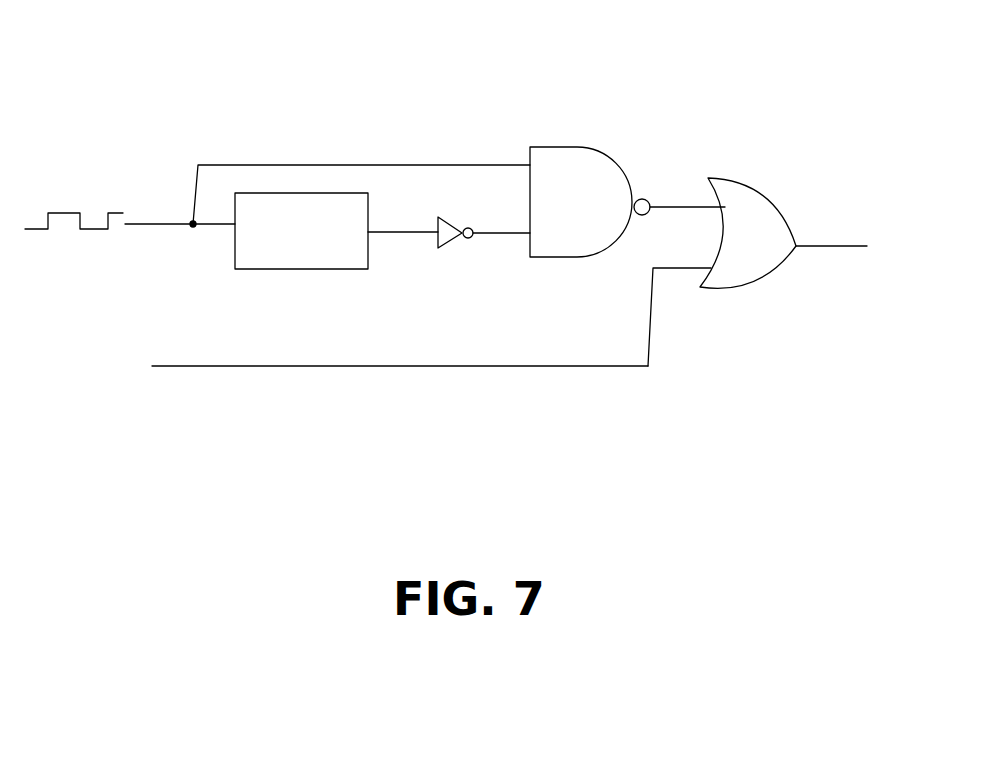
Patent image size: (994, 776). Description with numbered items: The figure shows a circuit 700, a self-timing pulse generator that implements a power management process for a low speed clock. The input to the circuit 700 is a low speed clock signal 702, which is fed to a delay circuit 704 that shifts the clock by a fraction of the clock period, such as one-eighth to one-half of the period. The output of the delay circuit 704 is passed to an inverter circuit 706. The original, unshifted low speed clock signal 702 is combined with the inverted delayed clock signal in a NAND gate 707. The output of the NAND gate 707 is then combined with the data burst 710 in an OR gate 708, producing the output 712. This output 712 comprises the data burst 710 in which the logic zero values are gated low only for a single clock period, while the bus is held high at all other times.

The circuit 700 is at (170, 62).
The low speed clock signal 702 is at (277, 215).
The delay circuit 704 is at (336, 231).
The inverter circuit 706 is at (484, 221).
The NAND gate 707 is at (627, 202).
The OR gate 708 is at (722, 272).
The data burst 710 is at (332, 370).
The output 712 is at (835, 234).